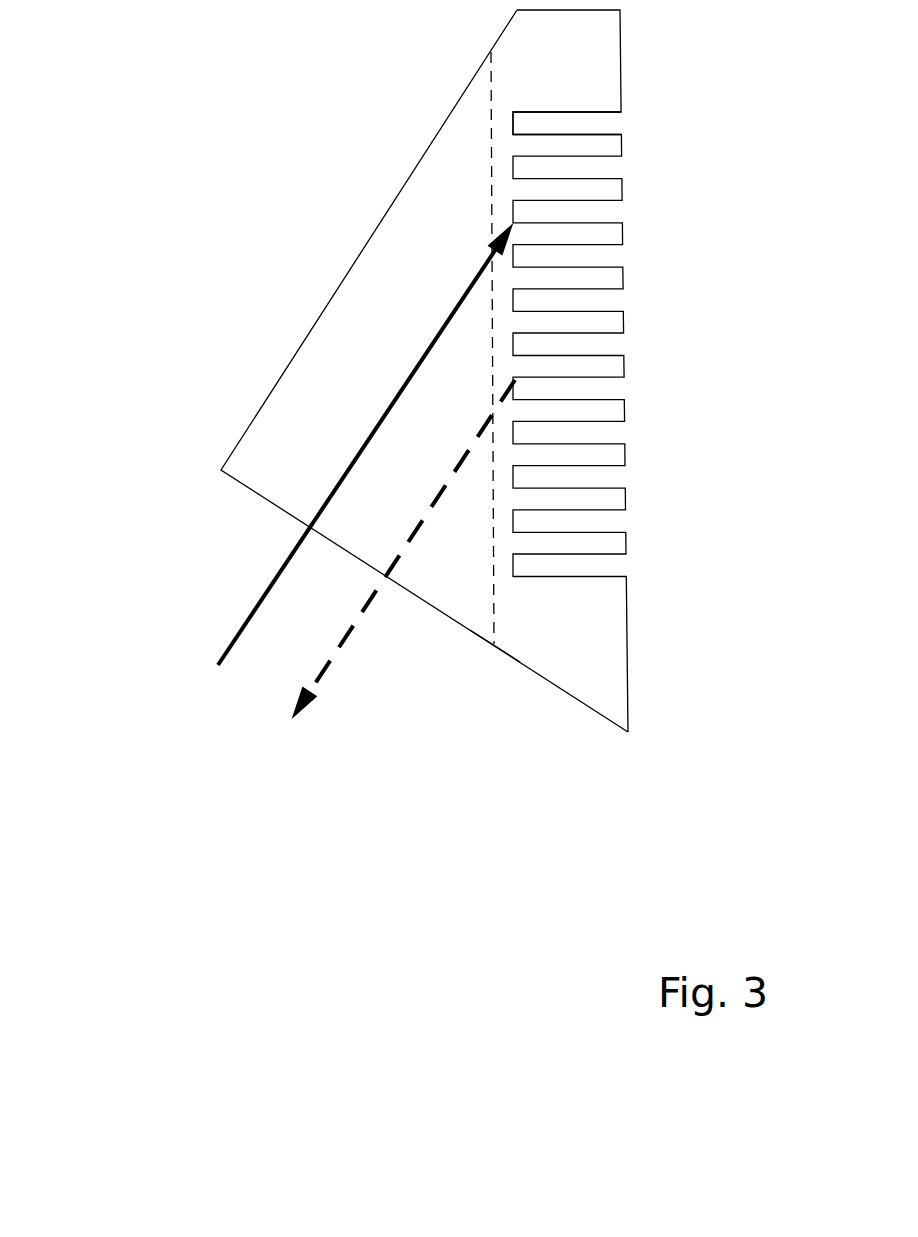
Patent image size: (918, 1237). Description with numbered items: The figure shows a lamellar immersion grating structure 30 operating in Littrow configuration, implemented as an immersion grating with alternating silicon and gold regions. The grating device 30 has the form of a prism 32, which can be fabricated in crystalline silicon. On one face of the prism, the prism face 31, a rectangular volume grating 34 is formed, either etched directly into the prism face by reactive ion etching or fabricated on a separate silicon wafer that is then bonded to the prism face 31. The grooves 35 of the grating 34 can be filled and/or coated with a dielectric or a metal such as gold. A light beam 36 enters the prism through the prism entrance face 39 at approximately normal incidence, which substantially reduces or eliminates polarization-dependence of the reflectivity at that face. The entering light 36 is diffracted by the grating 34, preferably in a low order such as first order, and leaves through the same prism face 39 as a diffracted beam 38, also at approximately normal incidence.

The lamellar immersion grating structure 30 is at (394, 406).
The prism face 31 is at (491, 118).
The prism 32 is at (298, 394).
The grating 34 is at (610, 602).
The grooves 35 is at (592, 128).
The light beam 36 is at (240, 627).
The diffracted beam 38 is at (322, 675).
The prism entrance face 39 is at (504, 655).